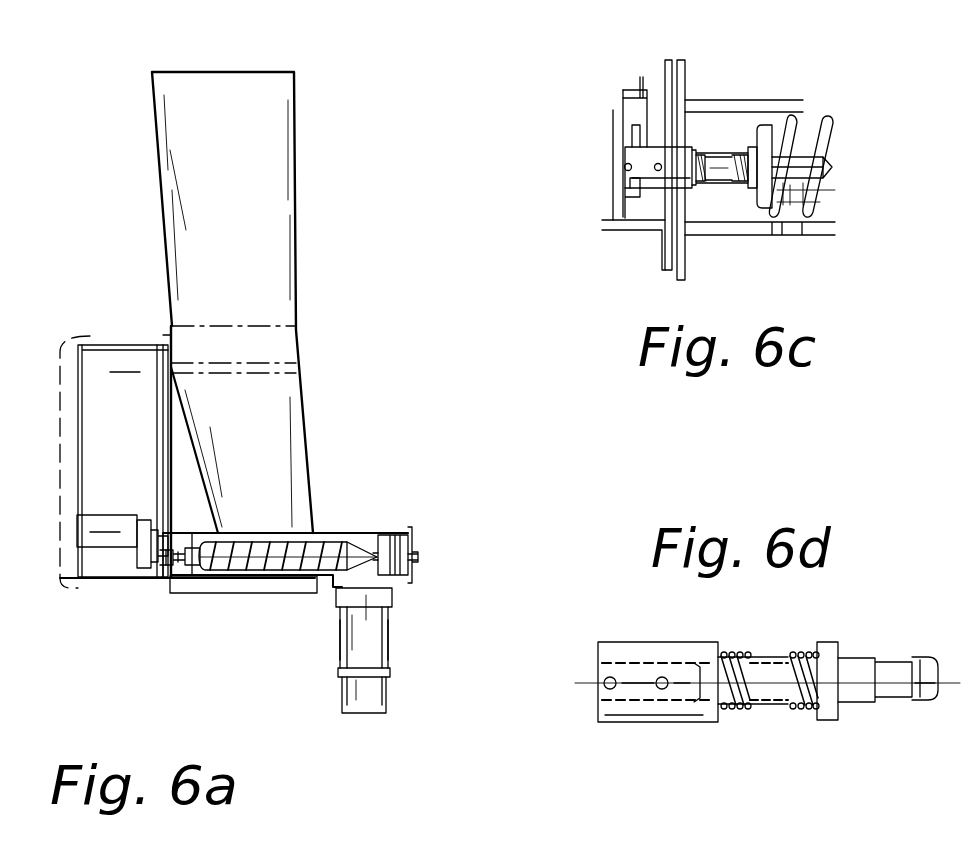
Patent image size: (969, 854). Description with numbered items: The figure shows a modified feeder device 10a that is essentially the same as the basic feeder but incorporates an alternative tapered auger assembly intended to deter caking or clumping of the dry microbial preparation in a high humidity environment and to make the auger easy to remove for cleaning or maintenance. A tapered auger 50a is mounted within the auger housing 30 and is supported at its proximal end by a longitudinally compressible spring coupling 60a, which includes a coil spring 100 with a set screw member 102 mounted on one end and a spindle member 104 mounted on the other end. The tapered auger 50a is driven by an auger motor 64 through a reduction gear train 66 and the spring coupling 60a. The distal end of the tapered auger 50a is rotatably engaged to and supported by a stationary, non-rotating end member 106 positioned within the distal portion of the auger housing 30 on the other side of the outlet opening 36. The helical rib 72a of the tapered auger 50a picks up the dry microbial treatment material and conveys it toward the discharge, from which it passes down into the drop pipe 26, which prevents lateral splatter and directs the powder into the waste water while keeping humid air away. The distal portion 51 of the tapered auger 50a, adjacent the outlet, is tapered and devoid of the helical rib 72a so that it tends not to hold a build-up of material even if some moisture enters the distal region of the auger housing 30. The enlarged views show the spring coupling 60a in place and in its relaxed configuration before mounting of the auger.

In FIG. 6A, the modified device 10a is at (331, 224).
In FIG. 6A, the auger motor 64 is at (103, 537).
In FIG. 6C, the auger motor 64 is at (607, 138).
In FIG. 6A, the reduction gear train 66 is at (147, 578).
In FIG. 6A, the spring coupling 60a is at (202, 547).
In FIG. 6C, the spring coupling 60a is at (728, 146).
In FIG. 6D, the spring coupling 60a is at (769, 648).
In FIG. 6A, the tapered auger 50a is at (252, 547).
In FIG. 6C, the tapered auger 50a is at (803, 130).
In FIG. 6A, the auger housing 30 is at (329, 528).
In FIG. 6A, the distal portion 51 is at (368, 542).
In FIG. 6A, the end member 106 is at (412, 532).
In FIG. 6A, the helical rib 72a is at (265, 578).
In FIG. 6A, the outlet opening 36 is at (368, 584).
In FIG. 6A, the drop pipe 26 is at (338, 650).
In FIG. 6C, the set screw member 102 is at (657, 146).
In FIG. 6D, the set screw member 102 is at (650, 725).
In FIG. 6C, the spindle member 104 is at (771, 180).
In FIG. 6D, the spindle member 104 is at (892, 703).
In FIG. 6C, the coil spring 100 is at (743, 190).
In FIG. 6D, the coil spring 100 is at (780, 708).